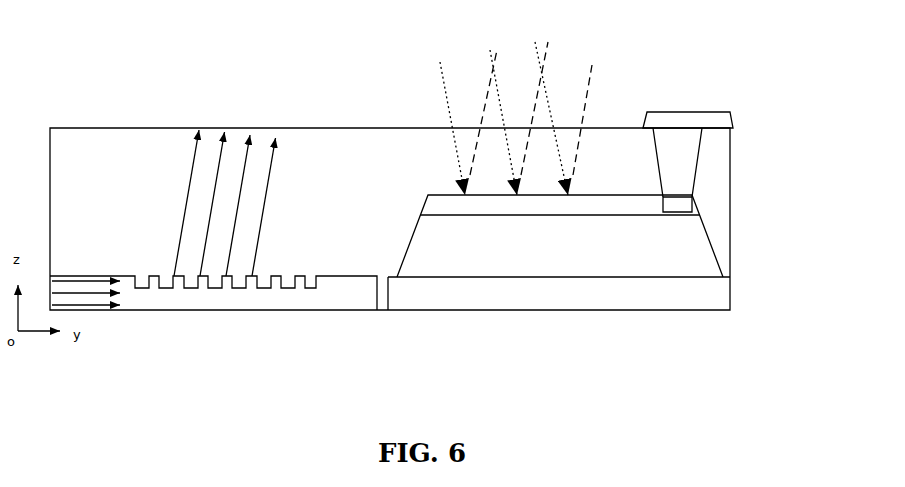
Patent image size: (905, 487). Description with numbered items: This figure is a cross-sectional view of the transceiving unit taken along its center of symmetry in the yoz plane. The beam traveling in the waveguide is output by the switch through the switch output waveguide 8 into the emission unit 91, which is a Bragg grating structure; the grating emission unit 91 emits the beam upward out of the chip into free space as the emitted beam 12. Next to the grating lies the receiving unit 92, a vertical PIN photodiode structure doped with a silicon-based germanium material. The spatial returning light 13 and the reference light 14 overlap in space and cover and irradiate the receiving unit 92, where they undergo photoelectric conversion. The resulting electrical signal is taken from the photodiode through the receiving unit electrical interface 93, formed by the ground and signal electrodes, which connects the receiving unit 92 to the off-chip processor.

The switch output waveguide 8 is at (95, 312).
The emitted beam 12 is at (262, 133).
The spatial returning light 13 is at (582, 112).
The reference light 14 is at (452, 110).
The emission unit 91 is at (232, 322).
The receiving unit 92 is at (558, 322).
The receiving unit electrical interface 93 is at (737, 120).